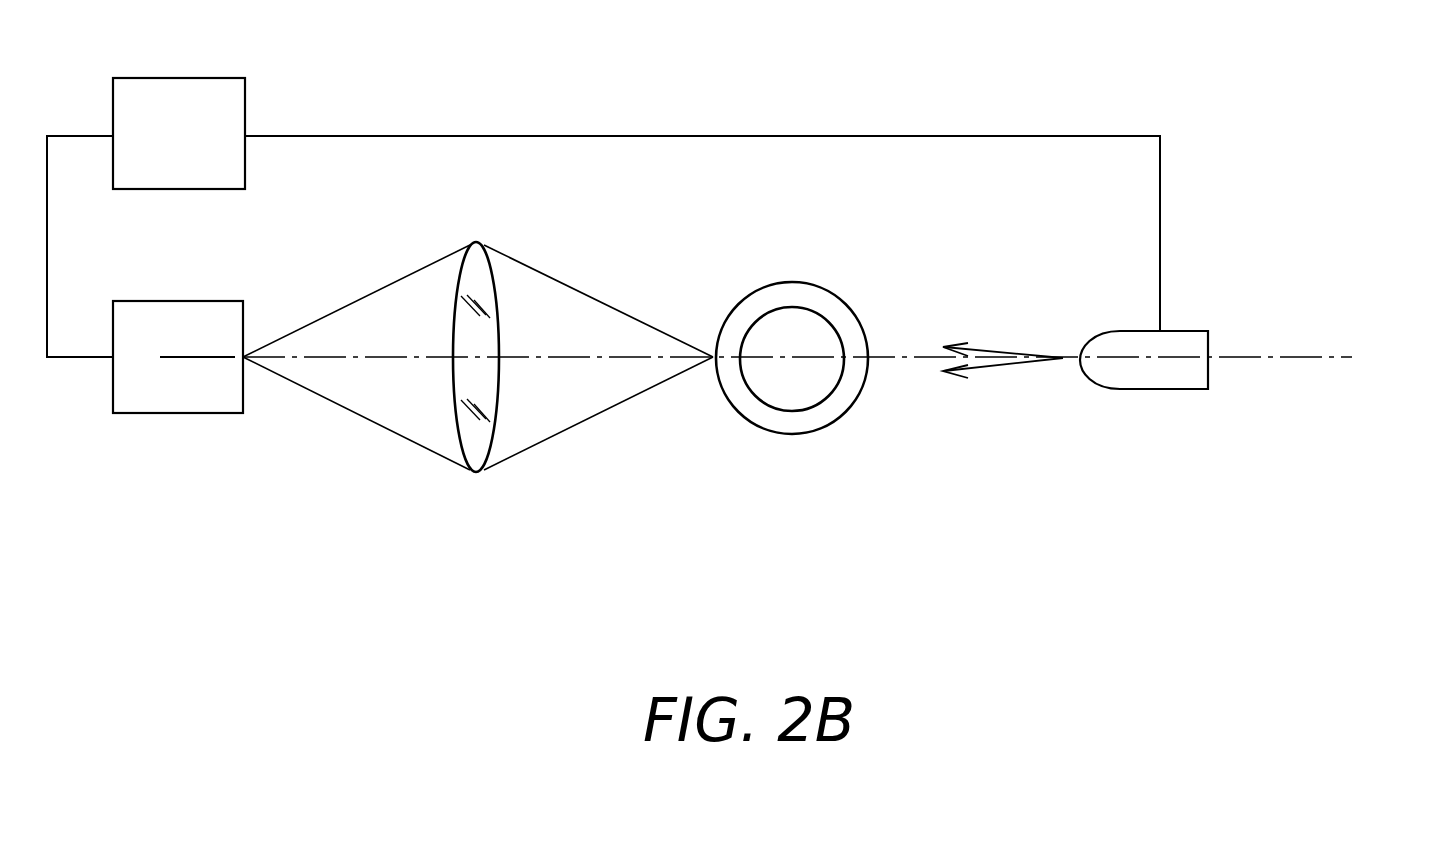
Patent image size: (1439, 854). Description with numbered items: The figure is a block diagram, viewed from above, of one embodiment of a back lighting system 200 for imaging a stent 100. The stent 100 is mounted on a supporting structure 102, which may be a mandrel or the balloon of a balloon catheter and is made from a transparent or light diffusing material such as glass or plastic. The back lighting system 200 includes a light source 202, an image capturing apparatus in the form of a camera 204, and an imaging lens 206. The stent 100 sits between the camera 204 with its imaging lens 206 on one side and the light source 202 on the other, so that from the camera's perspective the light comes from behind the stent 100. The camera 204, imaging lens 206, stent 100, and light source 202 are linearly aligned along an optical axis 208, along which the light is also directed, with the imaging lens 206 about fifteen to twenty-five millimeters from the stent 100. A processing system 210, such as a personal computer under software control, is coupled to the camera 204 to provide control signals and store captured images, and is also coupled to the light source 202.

The stent 100 is at (853, 413).
The supporting structure 102 is at (815, 311).
The back lighting system 200 is at (1253, 140).
The light source 202 is at (1167, 330).
The camera 204 is at (130, 300).
The imaging lens 206 is at (476, 473).
The optical axis 208 is at (1258, 357).
The processing system 210 is at (245, 80).